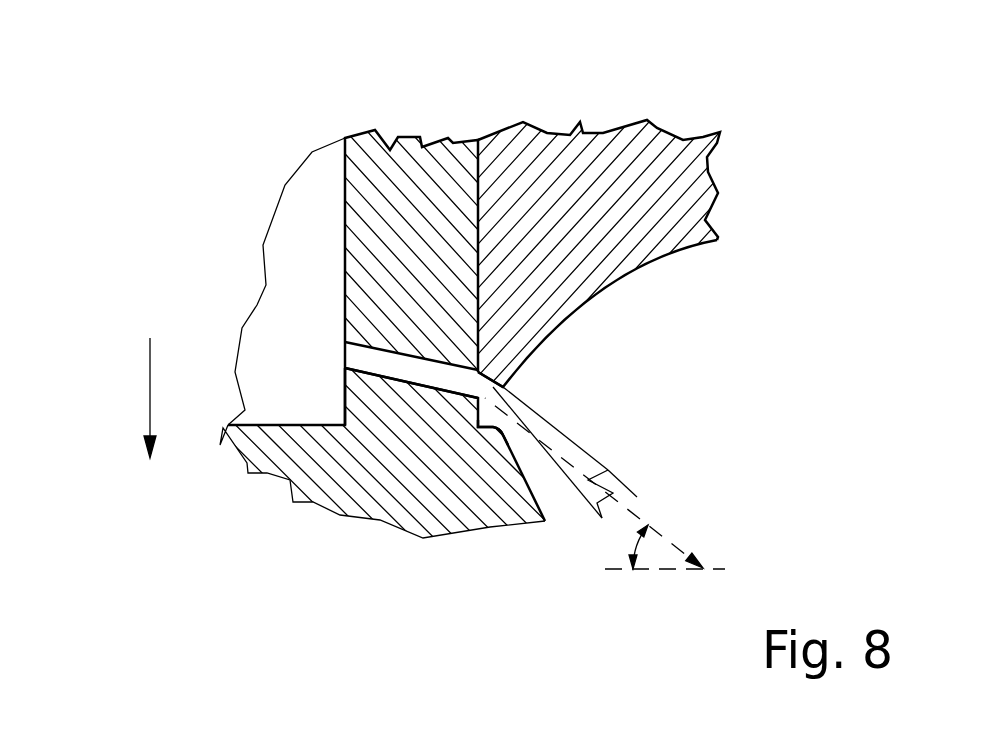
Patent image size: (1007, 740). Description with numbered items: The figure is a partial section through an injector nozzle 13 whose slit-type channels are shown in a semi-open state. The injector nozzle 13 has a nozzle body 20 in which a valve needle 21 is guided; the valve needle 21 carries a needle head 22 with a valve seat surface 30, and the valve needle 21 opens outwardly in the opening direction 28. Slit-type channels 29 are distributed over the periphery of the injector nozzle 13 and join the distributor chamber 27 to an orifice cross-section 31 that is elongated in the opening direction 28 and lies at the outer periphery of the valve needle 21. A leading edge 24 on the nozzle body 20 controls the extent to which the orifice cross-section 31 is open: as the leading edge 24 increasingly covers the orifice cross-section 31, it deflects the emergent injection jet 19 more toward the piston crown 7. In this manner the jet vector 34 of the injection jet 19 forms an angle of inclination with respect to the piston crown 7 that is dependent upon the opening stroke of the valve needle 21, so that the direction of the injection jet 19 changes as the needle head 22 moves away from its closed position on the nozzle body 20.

The injector nozzle 13 is at (682, 95).
The nozzle body 20 is at (604, 191).
The valve needle 21 is at (380, 155).
The needle head 22 is at (439, 508).
The leading edge 24 is at (500, 386).
The distributor chamber 27 is at (300, 360).
The opening direction 28 is at (150, 393).
The slit-type channel 29 is at (398, 372).
The valve seat surface 30 is at (492, 423).
The orifice cross-section 31 is at (683, 311).
The injection jet 19 is at (608, 470).
The jet vector 34 is at (617, 485).
The piston crown 7 is at (635, 572).